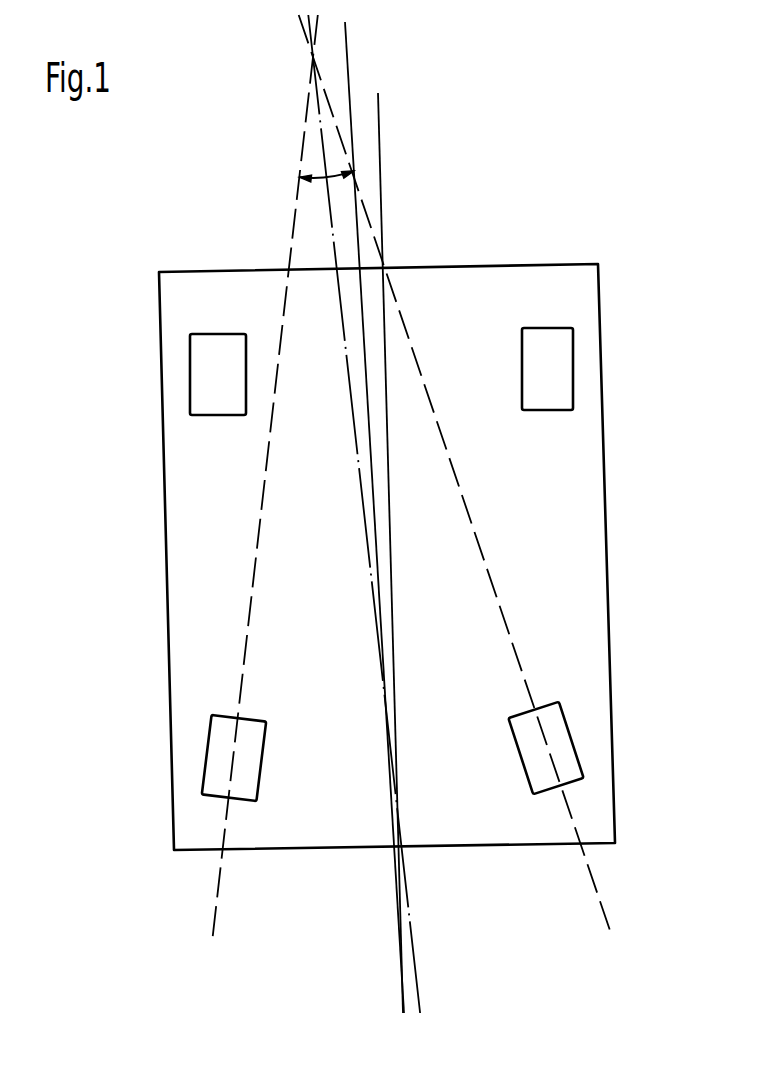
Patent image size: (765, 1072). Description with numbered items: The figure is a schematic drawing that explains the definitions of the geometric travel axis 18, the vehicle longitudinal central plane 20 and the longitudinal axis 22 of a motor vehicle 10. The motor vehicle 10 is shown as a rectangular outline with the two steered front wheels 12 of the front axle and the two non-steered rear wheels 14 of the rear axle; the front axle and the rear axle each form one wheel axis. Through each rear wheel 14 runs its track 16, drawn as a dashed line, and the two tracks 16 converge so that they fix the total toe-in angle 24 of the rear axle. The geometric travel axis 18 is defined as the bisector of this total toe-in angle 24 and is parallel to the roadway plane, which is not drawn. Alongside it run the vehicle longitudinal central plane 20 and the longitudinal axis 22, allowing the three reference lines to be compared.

The motor vehicle 10 is at (543, 264).
The steered front wheels 12 is at (190, 384).
The non-steered rear wheels 14 is at (205, 757).
The track 16 is at (219, 880).
The geometric travel axis 18 is at (421, 1005).
The vehicle longitudinal central plane 20 is at (350, 72).
The longitudinal axis 22 is at (380, 145).
The total toe-in angle 24 is at (303, 179).